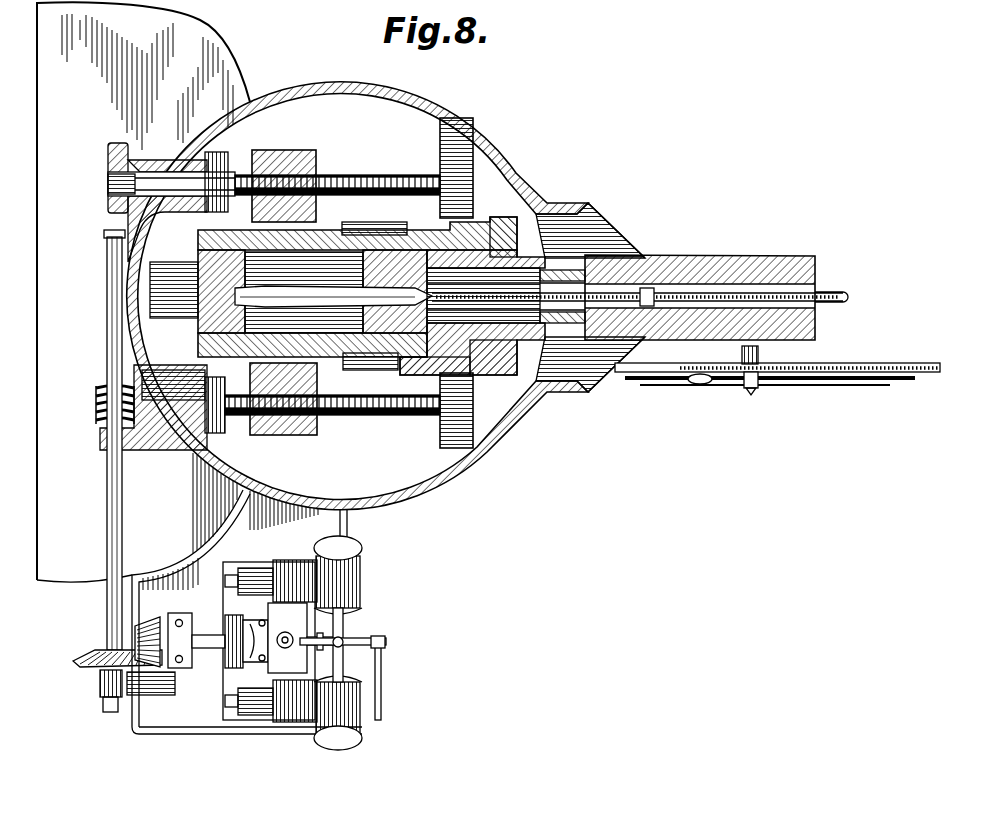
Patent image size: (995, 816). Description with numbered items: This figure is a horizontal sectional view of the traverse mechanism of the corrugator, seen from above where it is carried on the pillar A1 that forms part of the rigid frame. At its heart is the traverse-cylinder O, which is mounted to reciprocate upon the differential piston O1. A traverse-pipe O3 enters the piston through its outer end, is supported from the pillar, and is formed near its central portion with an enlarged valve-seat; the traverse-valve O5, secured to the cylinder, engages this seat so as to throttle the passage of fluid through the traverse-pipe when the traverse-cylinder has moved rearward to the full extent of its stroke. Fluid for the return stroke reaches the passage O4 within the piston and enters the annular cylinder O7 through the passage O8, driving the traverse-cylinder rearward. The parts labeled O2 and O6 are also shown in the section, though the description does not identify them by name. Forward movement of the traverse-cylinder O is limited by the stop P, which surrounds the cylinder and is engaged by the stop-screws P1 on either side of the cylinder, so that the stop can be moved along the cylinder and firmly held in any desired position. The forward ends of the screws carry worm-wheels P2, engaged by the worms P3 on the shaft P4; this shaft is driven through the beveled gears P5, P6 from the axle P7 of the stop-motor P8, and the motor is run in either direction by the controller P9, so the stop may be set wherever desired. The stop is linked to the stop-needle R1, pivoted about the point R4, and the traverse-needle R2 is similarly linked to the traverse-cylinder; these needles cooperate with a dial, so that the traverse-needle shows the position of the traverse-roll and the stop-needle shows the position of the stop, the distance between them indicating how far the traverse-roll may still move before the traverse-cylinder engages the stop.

The pillar A1 is at (484, 135).
The stop P is at (308, 433).
The stop-screws P1 is at (368, 178).
The worm-wheels P2 is at (118, 205).
The worms P3 is at (102, 396).
The shaft P4 is at (110, 492).
The beveled gear P5 is at (90, 655).
The beveled gear P6 is at (135, 633).
The axle of the stop-motor P7 is at (212, 653).
The stop-motor P8 is at (348, 553).
The controller P9 is at (381, 674).
The traverse-cylinder O is at (375, 367).
The differential piston O1 is at (641, 268).
The collar O2 is at (652, 290).
The traverse-pipe O3 is at (548, 290).
The passage O4 is at (517, 270).
The traverse-valve O5 is at (437, 362).
The body O6 is at (412, 245).
The annular cylinder O7 is at (455, 240).
The passage O8 is at (450, 360).
The stop-needle R1 is at (912, 380).
The traverse-needle R2 is at (860, 383).
The pivot point R4 is at (753, 394).